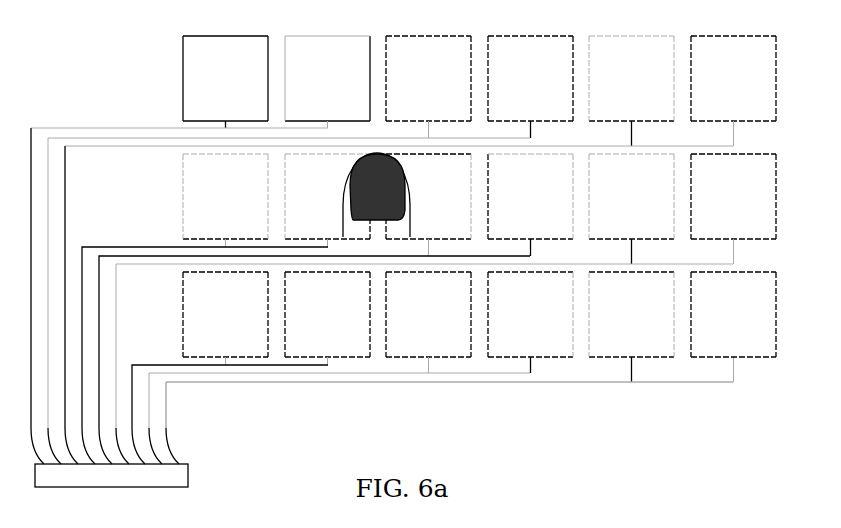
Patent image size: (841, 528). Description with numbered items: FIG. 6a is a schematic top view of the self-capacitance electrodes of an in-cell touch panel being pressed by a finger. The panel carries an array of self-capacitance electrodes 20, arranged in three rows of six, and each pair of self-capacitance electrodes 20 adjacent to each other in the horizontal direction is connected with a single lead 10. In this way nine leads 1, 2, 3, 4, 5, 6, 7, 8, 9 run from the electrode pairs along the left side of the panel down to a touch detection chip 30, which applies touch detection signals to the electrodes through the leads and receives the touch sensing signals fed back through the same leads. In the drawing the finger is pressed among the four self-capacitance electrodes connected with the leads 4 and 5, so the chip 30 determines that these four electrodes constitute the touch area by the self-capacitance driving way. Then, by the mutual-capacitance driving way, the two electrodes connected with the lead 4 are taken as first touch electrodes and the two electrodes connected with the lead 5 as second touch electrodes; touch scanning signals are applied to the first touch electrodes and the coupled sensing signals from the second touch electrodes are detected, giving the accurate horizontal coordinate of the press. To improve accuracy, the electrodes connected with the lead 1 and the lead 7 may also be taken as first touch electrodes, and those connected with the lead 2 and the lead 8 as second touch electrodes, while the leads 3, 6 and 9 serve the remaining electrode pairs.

The lead 1 is at (177, 296).
The lead 2 is at (286, 301).
The lead 3 is at (396, 305).
The lead 4 is at (202, 355).
The lead 5 is at (312, 360).
The lead 6 is at (422, 364).
The lead 7 is at (227, 414).
The lead 8 is at (337, 418).
The lead 9 is at (447, 423).
The lead 10 is at (578, 382).
The self-capacitance electrode 20 is at (765, 338).
The touch detection chip 30 is at (111, 475).